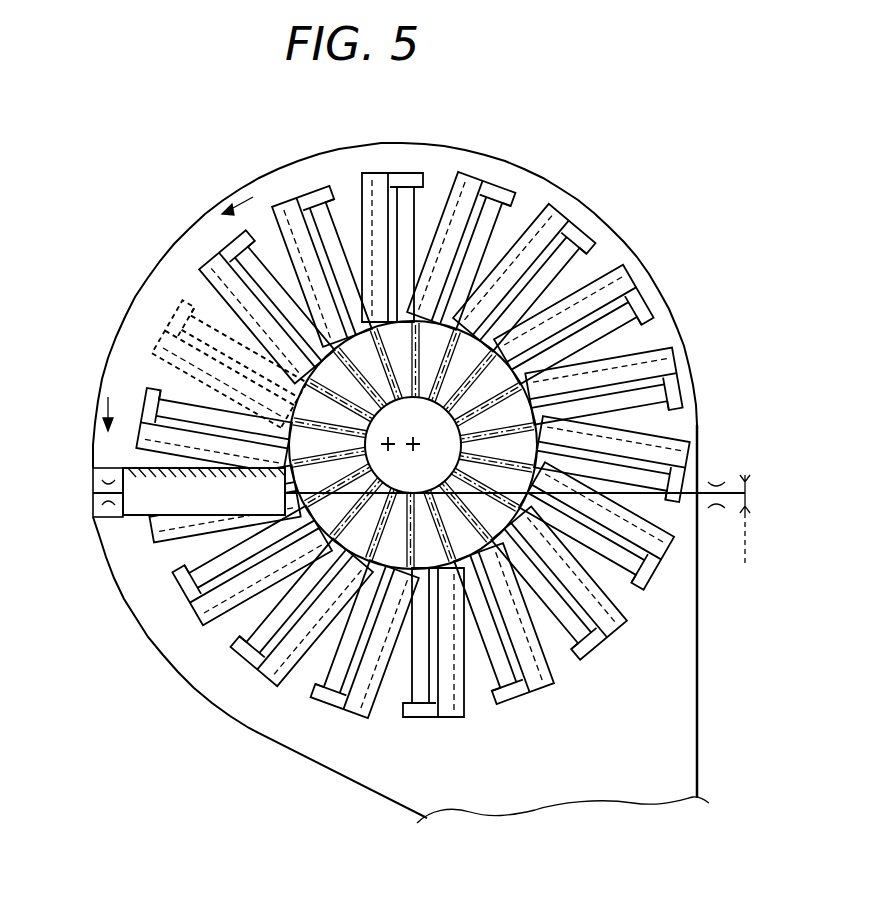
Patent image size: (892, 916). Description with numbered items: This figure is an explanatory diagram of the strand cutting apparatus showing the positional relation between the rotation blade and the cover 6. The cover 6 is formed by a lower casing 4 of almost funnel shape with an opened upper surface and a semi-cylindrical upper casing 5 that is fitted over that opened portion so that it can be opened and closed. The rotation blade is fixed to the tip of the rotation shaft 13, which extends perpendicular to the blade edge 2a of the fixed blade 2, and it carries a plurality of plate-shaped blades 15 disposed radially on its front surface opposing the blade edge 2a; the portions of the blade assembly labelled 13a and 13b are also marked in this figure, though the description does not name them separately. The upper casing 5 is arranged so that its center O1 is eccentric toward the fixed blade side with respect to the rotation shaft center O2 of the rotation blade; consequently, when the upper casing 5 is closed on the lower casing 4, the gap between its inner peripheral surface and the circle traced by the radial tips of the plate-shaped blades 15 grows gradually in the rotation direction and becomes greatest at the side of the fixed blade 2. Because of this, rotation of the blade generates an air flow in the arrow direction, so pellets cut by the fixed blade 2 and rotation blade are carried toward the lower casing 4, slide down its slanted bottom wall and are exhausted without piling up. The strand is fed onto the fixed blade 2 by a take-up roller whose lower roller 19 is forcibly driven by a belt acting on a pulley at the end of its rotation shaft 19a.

The fixed blade 2 is at (130, 460).
The blade edge 2a is at (182, 471).
The lower casing 4 is at (235, 680).
The upper casing 5 is at (520, 168).
The cover 6 is at (428, 140).
The rotation shaft 13 is at (583, 277).
The blade outer part 13a is at (667, 418).
The blade inner part 13b is at (643, 451).
The plate-shaped blade 15 is at (152, 402).
The lower roller 19 is at (115, 473).
The rotation shaft 19a is at (540, 520).
The center of upper casing O1 is at (386, 442).
The rotation shaft center O2 is at (415, 442).